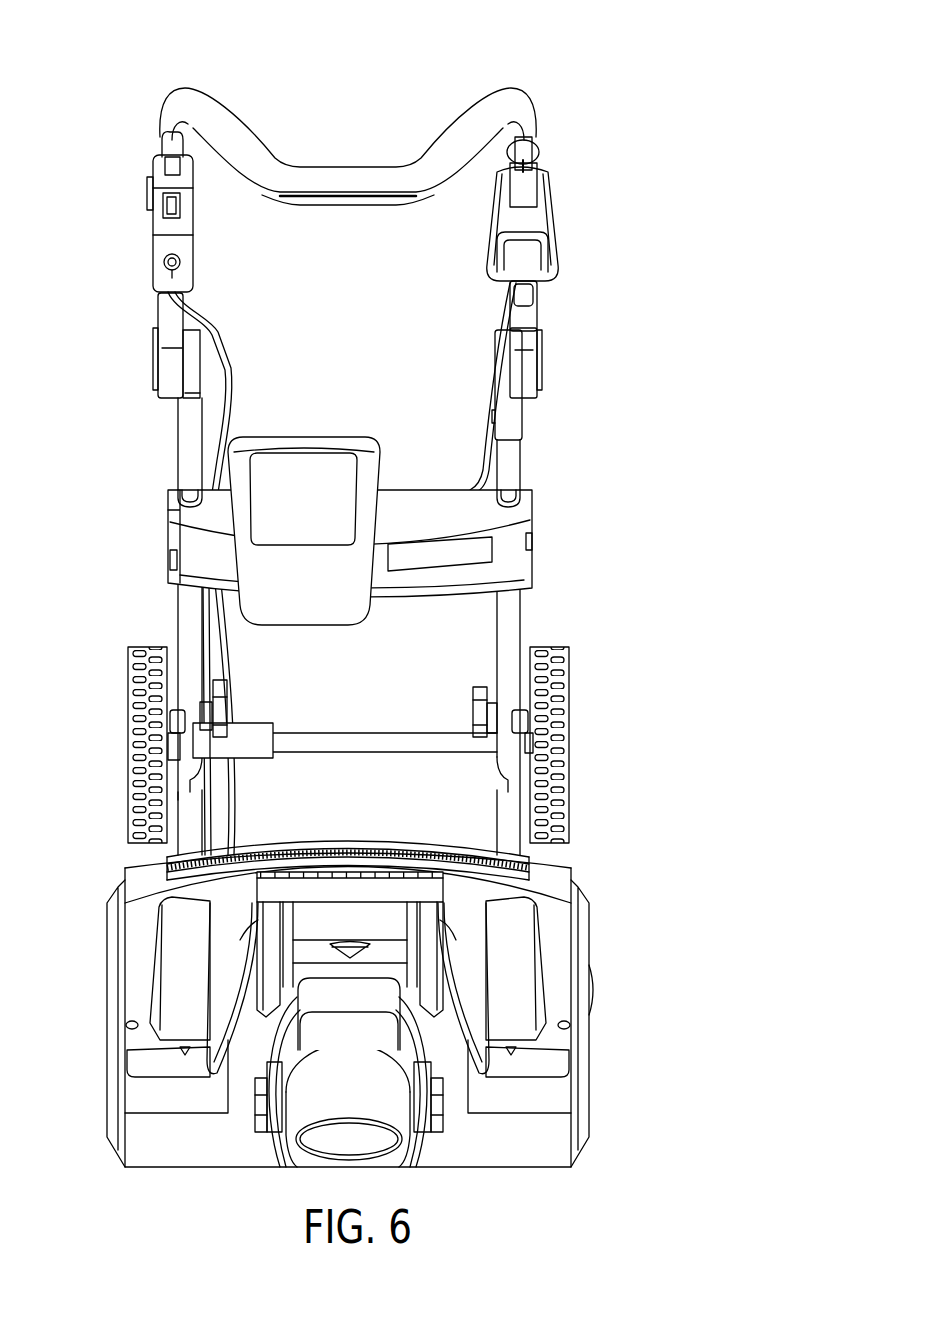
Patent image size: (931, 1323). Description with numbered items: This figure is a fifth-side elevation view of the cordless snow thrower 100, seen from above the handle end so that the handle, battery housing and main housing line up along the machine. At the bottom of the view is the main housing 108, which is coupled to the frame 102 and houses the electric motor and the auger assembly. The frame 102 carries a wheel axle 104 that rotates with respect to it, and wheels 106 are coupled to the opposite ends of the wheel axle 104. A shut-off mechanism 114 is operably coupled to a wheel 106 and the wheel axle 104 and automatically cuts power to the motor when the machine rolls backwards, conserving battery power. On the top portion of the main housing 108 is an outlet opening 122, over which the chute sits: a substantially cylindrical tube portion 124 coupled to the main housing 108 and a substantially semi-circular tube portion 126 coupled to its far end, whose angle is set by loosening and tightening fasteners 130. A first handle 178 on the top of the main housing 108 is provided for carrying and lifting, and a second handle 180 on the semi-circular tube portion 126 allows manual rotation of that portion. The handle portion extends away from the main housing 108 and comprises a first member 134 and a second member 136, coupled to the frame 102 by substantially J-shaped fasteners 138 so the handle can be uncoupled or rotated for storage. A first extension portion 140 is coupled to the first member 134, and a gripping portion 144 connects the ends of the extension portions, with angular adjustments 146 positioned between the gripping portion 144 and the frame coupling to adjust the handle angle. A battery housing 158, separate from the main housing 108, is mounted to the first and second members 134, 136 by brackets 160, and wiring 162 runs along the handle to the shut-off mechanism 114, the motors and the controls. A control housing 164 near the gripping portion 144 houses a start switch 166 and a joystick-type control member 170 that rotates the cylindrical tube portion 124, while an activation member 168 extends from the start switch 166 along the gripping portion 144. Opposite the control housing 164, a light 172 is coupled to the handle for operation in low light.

The cordless snow thrower 100 is at (153, 71).
The frame 102 is at (188, 833).
The wheel axle 104 is at (378, 740).
The wheels 106 is at (133, 722).
The main housing 108 is at (548, 1095).
The shut-off mechanism 114 is at (265, 732).
The outlet opening 122 is at (342, 1133).
The substantially cylindrical tube portion 124 is at (287, 1045).
The substantially semi-circular tube portion 126 is at (400, 1128).
The fasteners 130 is at (258, 1115).
The first member 134 is at (512, 632).
The second member 136 is at (185, 627).
The fasteners 138 is at (220, 697).
The first extension portion 140 is at (525, 297).
The gripping portion 144 is at (305, 167).
The angular adjustments 146 is at (144, 354).
The battery housing 158 is at (312, 440).
The brackets 160 is at (175, 503).
The wiring 162 is at (213, 342).
The control housing 164 is at (192, 250).
The start switch 166 is at (147, 193).
The activation member 168 is at (310, 207).
The control member 170 is at (172, 276).
The light 172 is at (163, 209).
The first handle 178 is at (273, 920).
The second handle 180 is at (305, 1000).